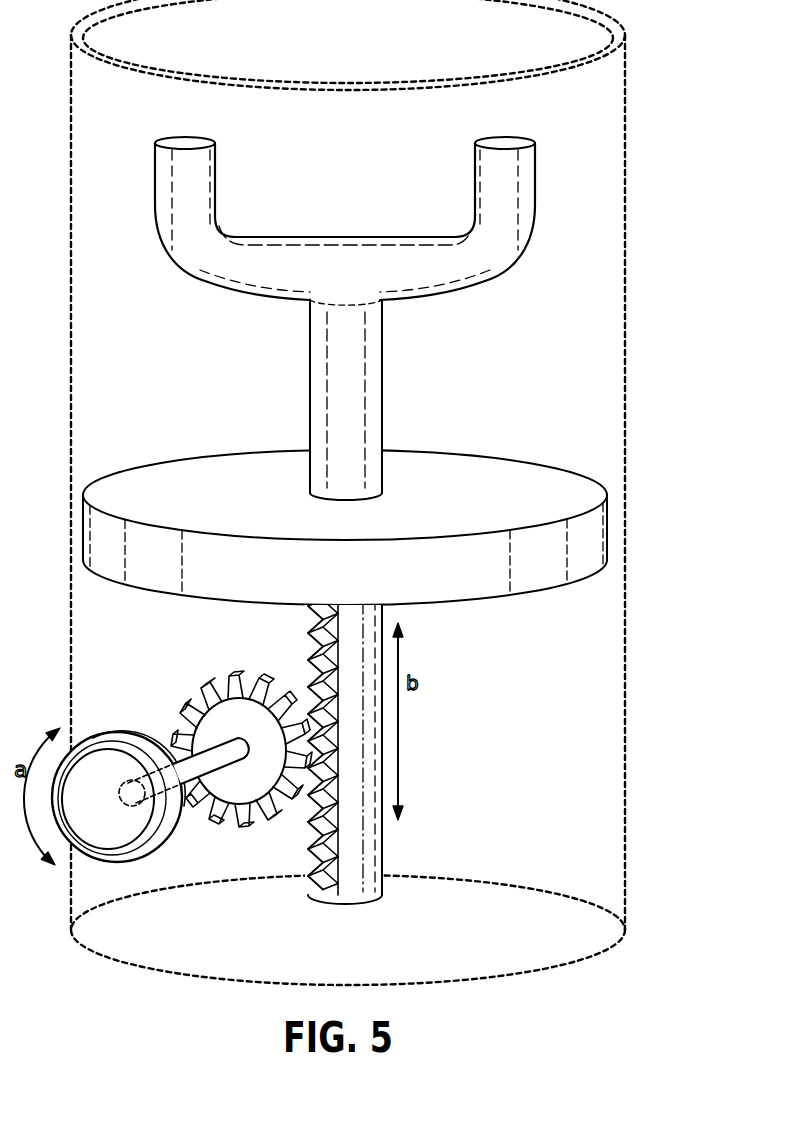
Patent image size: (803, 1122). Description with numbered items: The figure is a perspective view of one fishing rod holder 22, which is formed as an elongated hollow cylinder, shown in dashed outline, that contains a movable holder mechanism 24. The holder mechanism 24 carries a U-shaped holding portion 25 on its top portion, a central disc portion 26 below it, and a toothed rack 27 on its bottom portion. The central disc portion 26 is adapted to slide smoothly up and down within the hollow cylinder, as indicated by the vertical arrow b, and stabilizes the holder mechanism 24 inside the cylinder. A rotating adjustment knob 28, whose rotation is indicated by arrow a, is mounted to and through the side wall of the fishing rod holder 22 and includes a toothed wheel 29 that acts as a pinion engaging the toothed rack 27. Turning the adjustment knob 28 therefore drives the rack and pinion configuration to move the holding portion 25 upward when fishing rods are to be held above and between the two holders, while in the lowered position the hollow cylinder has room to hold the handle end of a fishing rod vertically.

The fishing rod holder 22 is at (661, 104).
The holder mechanism 24 is at (382, 382).
The U-shaped holding portion 25 is at (215, 187).
The central disc portion 26 is at (537, 590).
The toothed rack 27 is at (382, 868).
The adjustment knob 28 is at (180, 820).
The toothed wheel 29 is at (192, 717).